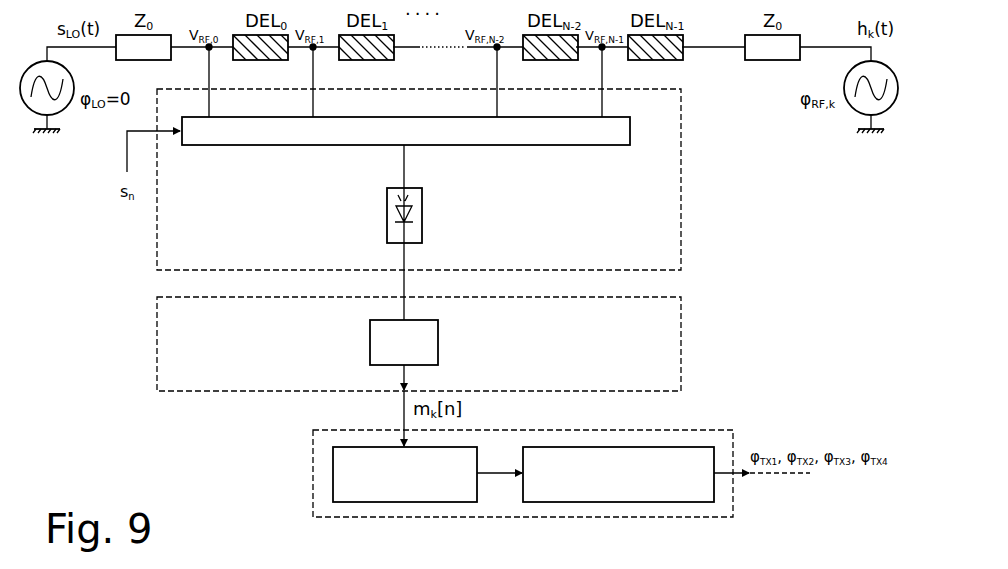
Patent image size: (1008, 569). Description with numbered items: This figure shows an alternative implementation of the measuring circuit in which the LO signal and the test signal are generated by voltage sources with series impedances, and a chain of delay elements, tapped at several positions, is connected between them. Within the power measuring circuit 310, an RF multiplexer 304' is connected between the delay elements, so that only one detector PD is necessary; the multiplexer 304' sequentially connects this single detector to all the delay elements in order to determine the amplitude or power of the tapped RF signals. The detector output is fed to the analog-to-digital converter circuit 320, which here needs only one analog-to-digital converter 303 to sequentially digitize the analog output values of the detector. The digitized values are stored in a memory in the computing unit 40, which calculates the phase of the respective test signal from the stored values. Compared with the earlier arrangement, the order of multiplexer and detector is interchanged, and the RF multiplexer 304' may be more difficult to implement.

The RF multiplexer 304' is at (406, 131).
The analog-to-digital converter 303 is at (438, 343).
The power measuring circuit 310 is at (681, 213).
The analog-to-digital converter circuit 320 is at (681, 343).
The computing unit 40 is at (313, 456).